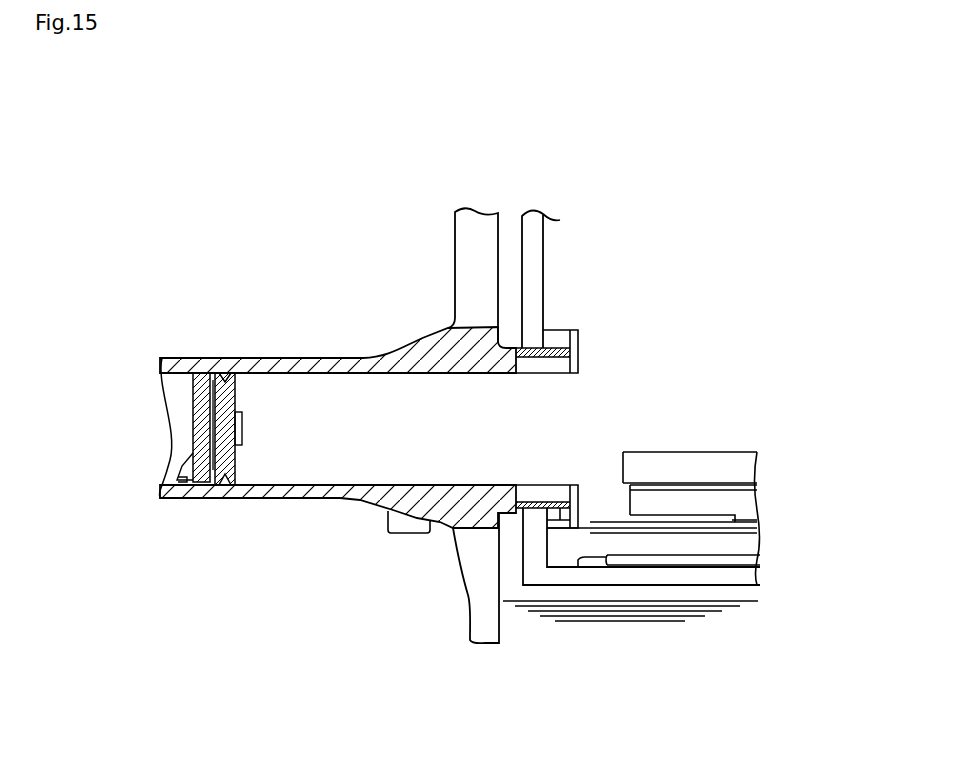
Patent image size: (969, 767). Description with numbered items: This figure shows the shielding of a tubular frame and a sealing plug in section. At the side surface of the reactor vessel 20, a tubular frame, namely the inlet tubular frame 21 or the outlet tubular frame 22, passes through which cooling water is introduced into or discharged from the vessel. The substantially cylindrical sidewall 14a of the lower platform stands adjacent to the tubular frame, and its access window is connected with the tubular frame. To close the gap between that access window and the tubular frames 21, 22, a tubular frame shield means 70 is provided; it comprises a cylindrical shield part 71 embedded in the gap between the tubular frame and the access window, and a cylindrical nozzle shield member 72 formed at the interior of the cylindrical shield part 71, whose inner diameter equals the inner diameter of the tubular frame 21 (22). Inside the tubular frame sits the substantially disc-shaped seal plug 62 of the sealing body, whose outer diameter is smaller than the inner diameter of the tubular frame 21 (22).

The reactor vessel 20 is at (475, 238).
The sidewall 14a is at (537, 236).
The inlet tubular frame 21 is at (337, 469).
The outlet tubular frame 22 is at (420, 357).
The seal plug 62 is at (232, 455).
The tubular frame shield means 70 is at (611, 420).
The cylindrical shield part 71 is at (584, 461).
The cylindrical nozzle shield member 72 is at (560, 348).